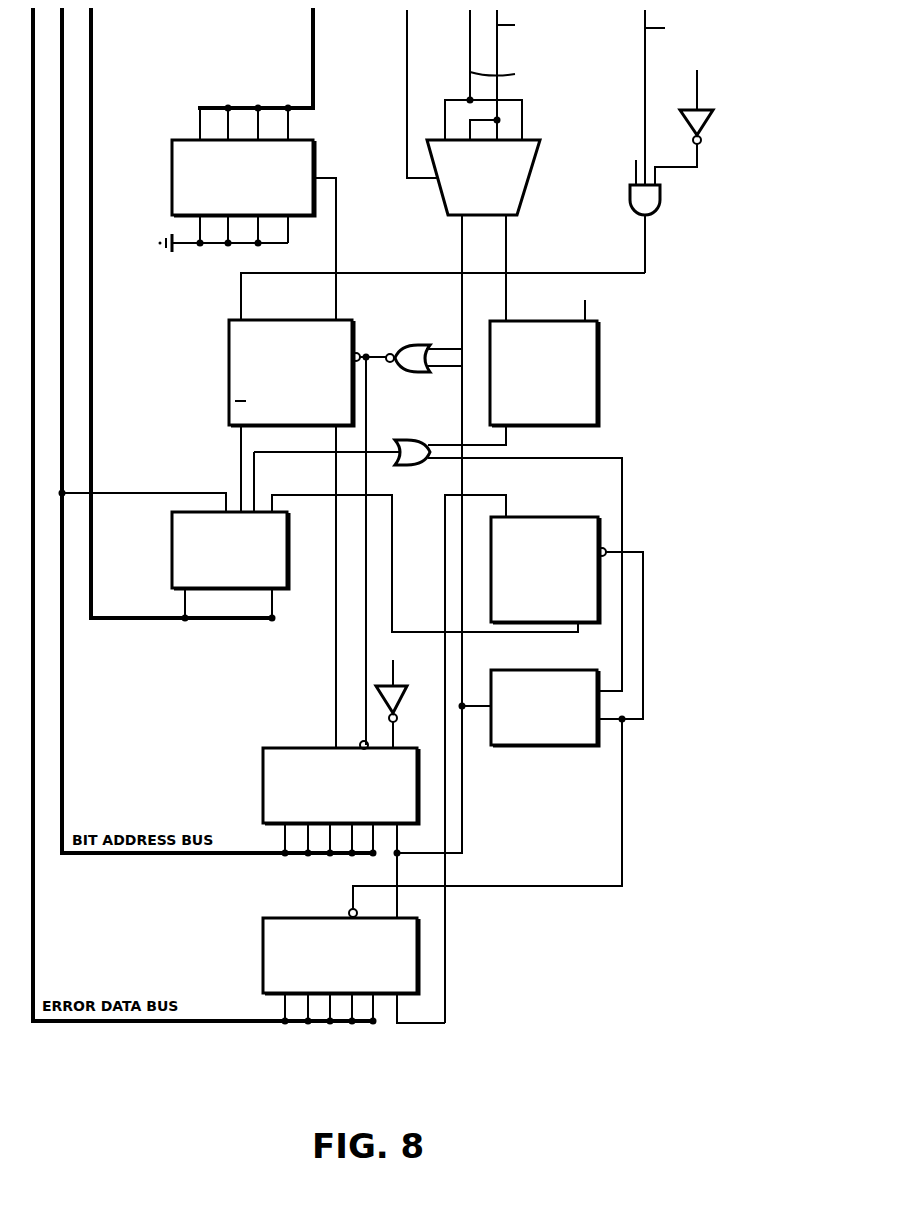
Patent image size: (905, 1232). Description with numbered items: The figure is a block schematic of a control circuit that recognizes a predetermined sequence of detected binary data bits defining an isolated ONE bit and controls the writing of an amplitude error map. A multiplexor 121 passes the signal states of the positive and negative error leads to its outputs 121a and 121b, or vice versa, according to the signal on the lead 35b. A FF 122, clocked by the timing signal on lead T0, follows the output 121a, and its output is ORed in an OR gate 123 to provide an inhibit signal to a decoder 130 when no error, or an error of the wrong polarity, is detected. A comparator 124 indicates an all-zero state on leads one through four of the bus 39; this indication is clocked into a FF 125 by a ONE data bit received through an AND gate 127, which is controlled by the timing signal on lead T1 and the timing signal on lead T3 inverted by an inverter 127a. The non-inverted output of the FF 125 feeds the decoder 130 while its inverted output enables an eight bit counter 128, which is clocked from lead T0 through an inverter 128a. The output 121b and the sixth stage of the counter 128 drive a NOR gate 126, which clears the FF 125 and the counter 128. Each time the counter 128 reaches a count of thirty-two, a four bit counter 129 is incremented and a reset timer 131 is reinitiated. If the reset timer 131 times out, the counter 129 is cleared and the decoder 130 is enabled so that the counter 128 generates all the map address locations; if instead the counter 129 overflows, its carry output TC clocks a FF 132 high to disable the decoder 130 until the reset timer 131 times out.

The bus 39 is at (313, 52).
The lead 35b is at (407, 52).
The multiplexor 121 is at (527, 190).
The output 121a is at (508, 218).
The output 121b is at (458, 218).
The FF 122 is at (599, 355).
The OR gate 123 is at (410, 430).
The comparator 124 is at (172, 178).
The FF 125 is at (229, 357).
The NOR gate 126 is at (412, 335).
The AND gate 127 is at (661, 207).
The inverter 127a is at (703, 129).
The eight bit counter 128 is at (263, 777).
The inverter 128a is at (400, 700).
The four bit counter 129 is at (263, 955).
The decoder 130 is at (172, 552).
The reset timer 131 is at (568, 745).
The FF 132 is at (573, 517).